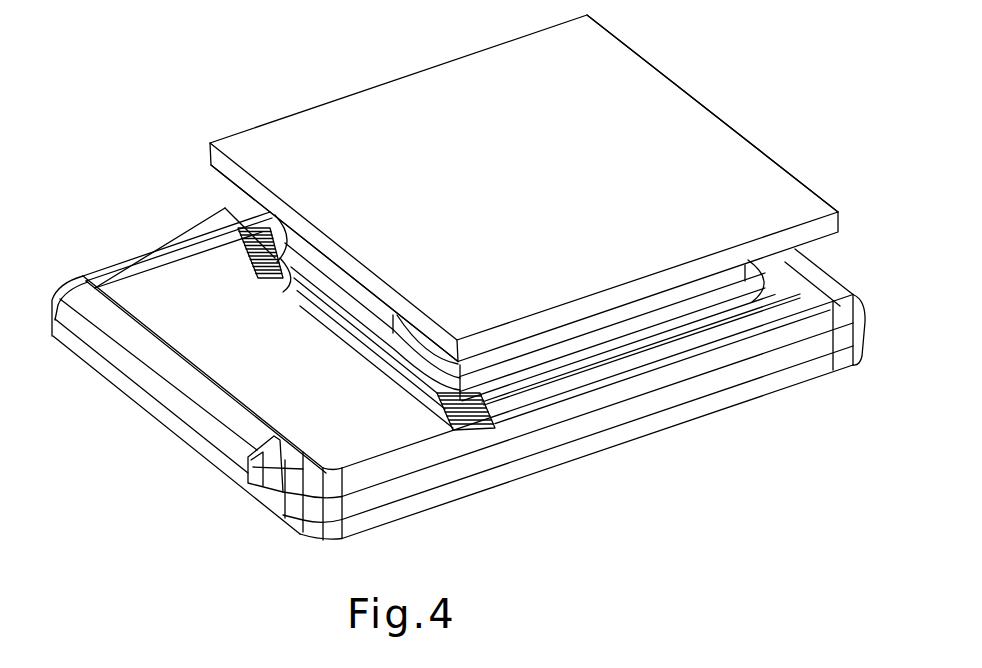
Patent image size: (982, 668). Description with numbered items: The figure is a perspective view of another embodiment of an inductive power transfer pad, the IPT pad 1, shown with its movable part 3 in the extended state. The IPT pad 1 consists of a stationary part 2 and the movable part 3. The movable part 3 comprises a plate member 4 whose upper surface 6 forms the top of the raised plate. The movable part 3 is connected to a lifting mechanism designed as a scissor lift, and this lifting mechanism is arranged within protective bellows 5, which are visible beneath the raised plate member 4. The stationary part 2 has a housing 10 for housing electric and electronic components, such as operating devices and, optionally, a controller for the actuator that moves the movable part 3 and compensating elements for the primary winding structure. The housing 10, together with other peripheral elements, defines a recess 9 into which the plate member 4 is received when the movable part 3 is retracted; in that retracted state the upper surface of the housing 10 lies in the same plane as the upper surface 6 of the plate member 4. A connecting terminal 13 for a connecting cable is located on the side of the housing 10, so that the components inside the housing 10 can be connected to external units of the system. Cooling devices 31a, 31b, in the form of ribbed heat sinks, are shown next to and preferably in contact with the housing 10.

The IPT pad 1 is at (639, 437).
The stationary part 2 is at (128, 273).
The movable part 3 is at (678, 115).
The plate member 4 is at (654, 88).
The bellows 5 is at (773, 287).
The upper surface 6 is at (618, 67).
The recess 9 is at (708, 334).
The housing 10 is at (172, 270).
The connecting terminal 13 is at (270, 494).
The cooling device 31a is at (465, 412).
The cooling device 31b is at (240, 237).